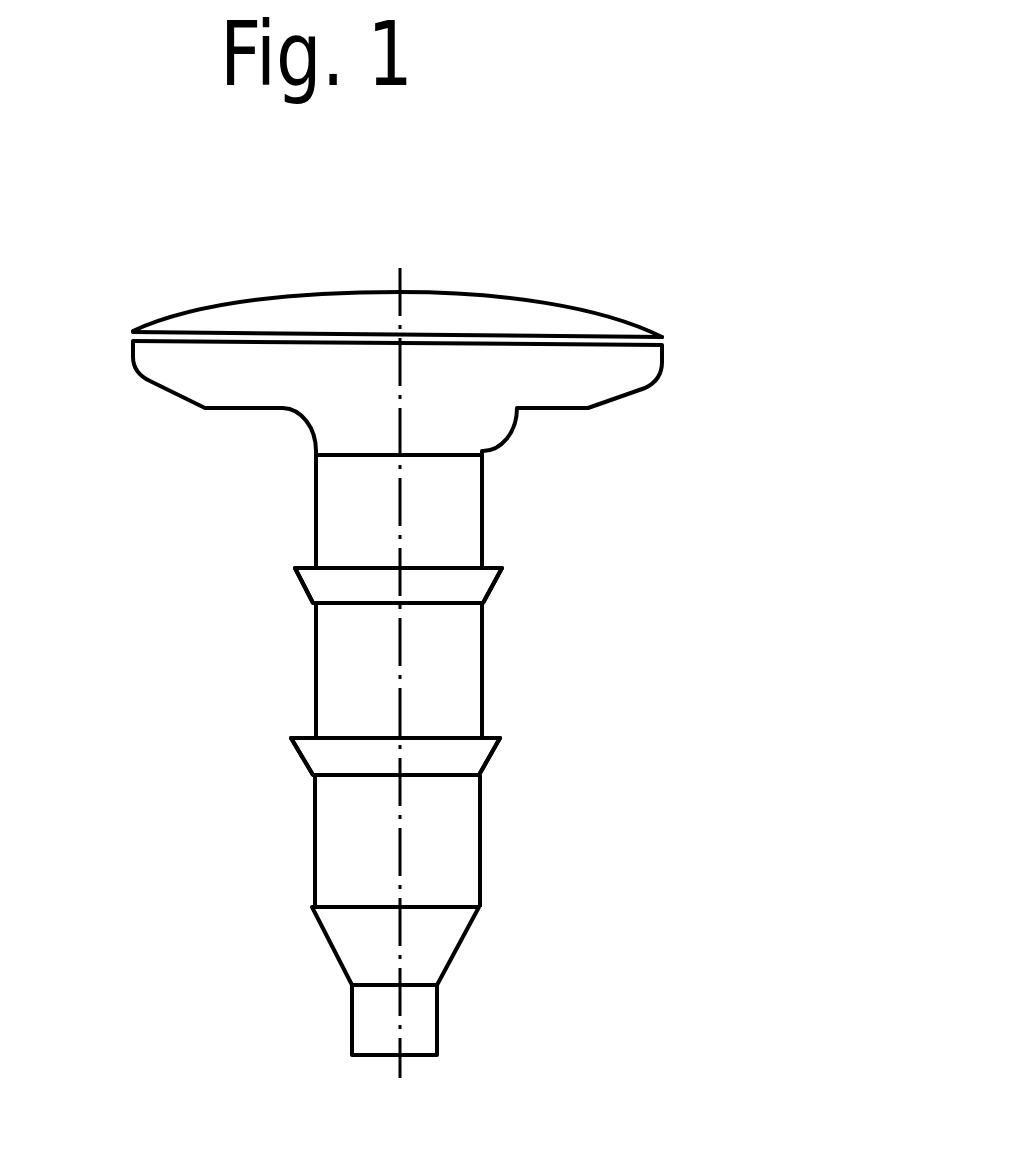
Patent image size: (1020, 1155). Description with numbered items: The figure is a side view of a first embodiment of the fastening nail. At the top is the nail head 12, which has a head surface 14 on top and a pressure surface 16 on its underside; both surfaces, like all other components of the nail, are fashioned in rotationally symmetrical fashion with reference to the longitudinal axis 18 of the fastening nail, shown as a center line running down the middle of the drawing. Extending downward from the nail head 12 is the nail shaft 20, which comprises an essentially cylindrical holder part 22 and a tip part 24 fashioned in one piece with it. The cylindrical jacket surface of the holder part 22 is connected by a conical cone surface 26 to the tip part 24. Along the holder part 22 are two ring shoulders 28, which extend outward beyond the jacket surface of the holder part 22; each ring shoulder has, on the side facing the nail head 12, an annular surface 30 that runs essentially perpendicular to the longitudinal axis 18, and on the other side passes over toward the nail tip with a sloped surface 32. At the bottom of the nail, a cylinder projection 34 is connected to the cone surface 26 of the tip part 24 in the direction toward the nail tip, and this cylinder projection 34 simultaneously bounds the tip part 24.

The nail head 12 is at (497, 643).
The head surface 14 is at (527, 298).
The pressure surface 16 is at (553, 417).
The longitudinal axis 18 is at (402, 487).
The nail shaft 20 is at (470, 681).
The holder part 22 is at (460, 827).
The tip part 24 is at (427, 1008).
The cone surface 26 is at (467, 935).
The ring shoulders 28 is at (318, 588).
The annular surface 30 is at (302, 566).
The sloped surface 32 is at (502, 751).
The cylinder projection 34 is at (365, 1033).